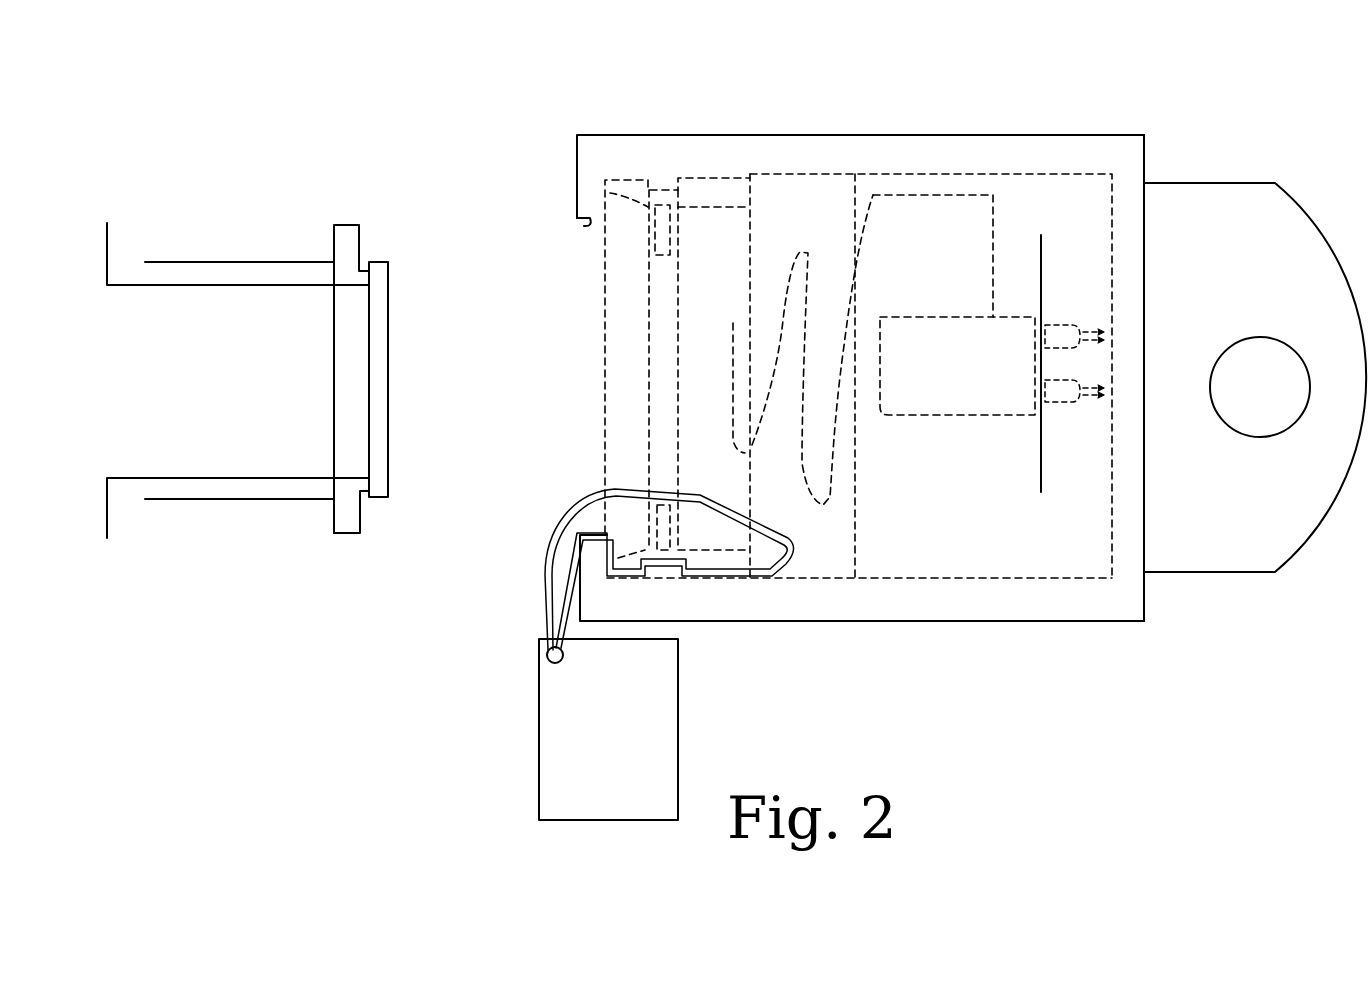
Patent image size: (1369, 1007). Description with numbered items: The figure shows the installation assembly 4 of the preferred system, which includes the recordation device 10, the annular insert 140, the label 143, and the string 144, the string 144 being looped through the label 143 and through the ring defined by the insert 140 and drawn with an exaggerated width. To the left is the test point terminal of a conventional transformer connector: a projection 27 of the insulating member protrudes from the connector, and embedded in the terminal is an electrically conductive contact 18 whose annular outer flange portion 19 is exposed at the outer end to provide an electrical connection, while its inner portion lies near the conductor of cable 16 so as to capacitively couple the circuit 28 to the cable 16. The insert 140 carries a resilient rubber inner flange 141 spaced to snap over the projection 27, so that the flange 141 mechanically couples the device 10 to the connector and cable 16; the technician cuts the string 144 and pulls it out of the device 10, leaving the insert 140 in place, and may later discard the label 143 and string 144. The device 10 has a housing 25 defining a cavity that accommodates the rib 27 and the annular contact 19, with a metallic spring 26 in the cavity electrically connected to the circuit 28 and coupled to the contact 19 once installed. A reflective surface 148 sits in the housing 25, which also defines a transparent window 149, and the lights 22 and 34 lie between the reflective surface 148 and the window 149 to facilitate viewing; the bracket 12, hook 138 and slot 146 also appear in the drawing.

The installation assembly 4 is at (416, 600).
The recordation device 10 is at (856, 652).
The mounting bracket 12 is at (170, 257).
The cable 16 is at (266, 158).
The electrically conductive contact 18 is at (247, 282).
The annular outer flange portion 19 is at (389, 472).
The light 22 is at (1058, 318).
The housing 25 is at (1040, 134).
The metallic spring 26 is at (800, 252).
The projection 27 is at (348, 220).
The circuit 28 is at (960, 366).
The light 34 is at (1058, 403).
The hook 138 is at (590, 222).
The annular insert 140 is at (605, 280).
The inner flange 141 is at (666, 256).
The label 143 is at (539, 779).
The string 144 is at (542, 560).
The slot 146 is at (617, 180).
The reflective surface 148 is at (1042, 470).
The transparent window 149 is at (1146, 358).